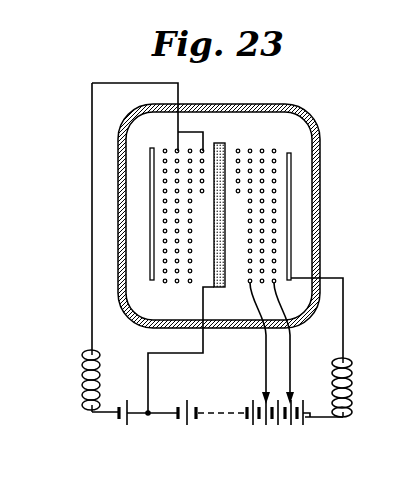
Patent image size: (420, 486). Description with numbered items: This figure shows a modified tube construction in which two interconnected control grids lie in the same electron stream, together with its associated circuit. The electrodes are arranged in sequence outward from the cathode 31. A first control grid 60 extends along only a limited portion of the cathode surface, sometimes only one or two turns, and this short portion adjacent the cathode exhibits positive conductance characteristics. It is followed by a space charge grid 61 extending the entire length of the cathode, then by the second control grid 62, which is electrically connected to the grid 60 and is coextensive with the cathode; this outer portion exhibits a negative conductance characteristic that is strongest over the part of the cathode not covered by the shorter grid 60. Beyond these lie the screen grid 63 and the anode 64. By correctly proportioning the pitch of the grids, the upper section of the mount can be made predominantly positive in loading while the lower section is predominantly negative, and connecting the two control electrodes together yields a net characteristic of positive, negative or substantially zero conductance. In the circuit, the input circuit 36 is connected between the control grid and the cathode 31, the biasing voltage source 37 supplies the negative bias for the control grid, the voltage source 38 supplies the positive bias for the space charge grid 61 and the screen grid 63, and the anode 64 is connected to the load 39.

The first control grid 60 is at (202, 160).
The cathode 31 is at (222, 143).
The space charge grid 61 is at (251, 150).
The second control grid 62 is at (264, 151).
The screen grid 63 is at (276, 151).
The anode 64 is at (291, 182).
The input circuit 36 is at (82, 376).
The biasing voltage source 37 is at (123, 428).
The voltage source 38 is at (225, 415).
The load 39 is at (352, 390).